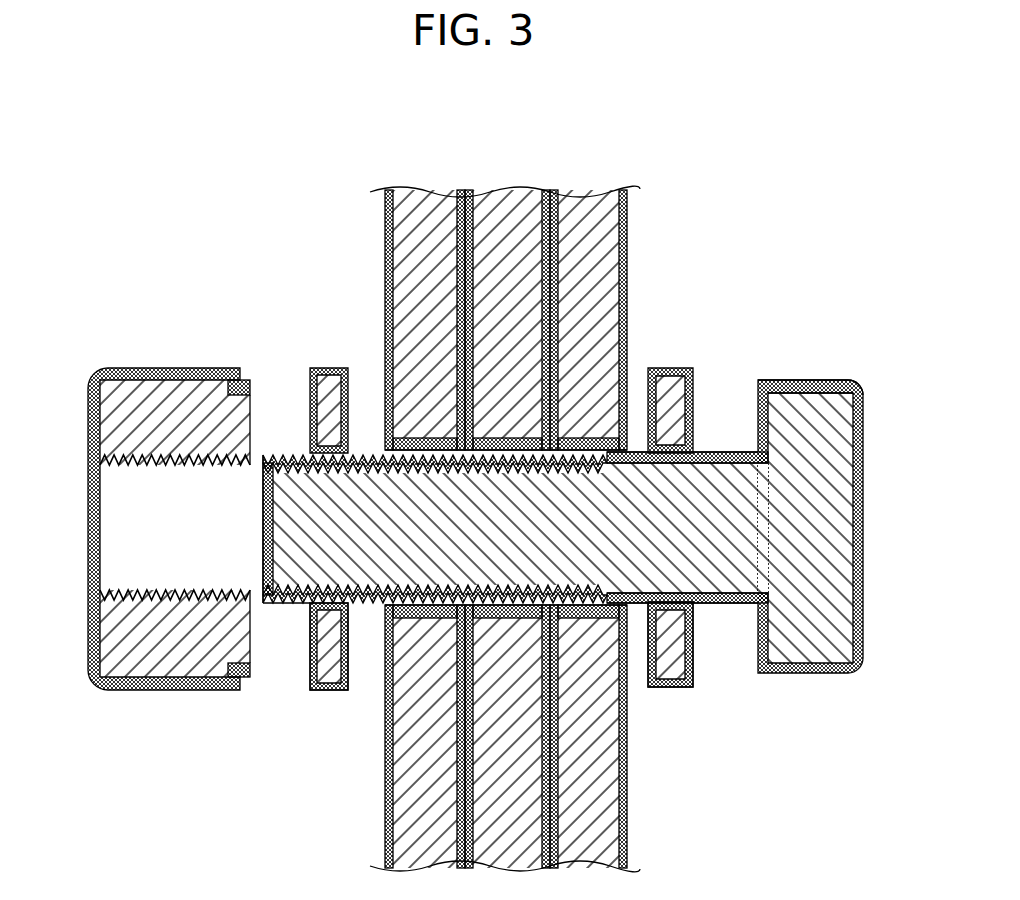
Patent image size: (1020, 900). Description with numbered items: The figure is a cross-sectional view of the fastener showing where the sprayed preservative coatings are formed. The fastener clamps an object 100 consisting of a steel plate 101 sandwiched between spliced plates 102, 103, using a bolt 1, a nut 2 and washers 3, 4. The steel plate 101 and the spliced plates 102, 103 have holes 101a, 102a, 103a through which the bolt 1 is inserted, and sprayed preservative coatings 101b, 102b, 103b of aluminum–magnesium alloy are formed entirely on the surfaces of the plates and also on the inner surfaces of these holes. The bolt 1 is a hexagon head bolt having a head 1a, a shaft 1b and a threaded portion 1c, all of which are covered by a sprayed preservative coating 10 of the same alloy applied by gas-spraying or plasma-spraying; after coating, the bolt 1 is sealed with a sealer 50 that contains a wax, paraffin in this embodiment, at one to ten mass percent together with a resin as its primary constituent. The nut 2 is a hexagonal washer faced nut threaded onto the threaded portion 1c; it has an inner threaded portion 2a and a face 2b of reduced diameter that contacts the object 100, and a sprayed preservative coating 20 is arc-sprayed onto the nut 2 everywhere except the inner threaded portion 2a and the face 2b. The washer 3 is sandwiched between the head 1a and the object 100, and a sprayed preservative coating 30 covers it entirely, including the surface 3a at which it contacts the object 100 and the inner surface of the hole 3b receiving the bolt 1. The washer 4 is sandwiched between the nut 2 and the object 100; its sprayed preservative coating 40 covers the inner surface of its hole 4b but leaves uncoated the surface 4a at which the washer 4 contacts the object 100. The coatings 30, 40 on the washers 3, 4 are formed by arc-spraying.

The bolt 1 is at (586, 490).
The head 1a is at (808, 371).
The shaft 1b is at (727, 442).
The threaded portion 1c is at (290, 443).
The sprayed preservative coating 10 is at (865, 560).
The nut 2 is at (161, 486).
The inner threaded portion 2a is at (130, 465).
The face 2b is at (250, 403).
The sprayed preservative coating 20 is at (161, 492).
The washer 3 is at (694, 540).
The surface 3a is at (648, 397).
The hole 3b is at (650, 605).
The sprayed preservative coating 30 is at (695, 672).
The washer 4 is at (309, 539).
The surface 4a is at (348, 398).
The hole 4b is at (357, 607).
The sprayed preservative coating 40 is at (312, 672).
The sealer 50 is at (288, 610).
The object 100 is at (505, 478).
The steel plate 101 is at (507, 499).
The hole 101a is at (504, 433).
The sprayed preservative coating 101b is at (504, 620).
The spliced plate 102 is at (588, 499).
The hole 102a is at (583, 433).
The sprayed preservative coating 102b is at (583, 620).
The spliced plate 103 is at (425, 499).
The hole 103a is at (427, 433).
The sprayed preservative coating 103b is at (427, 620).